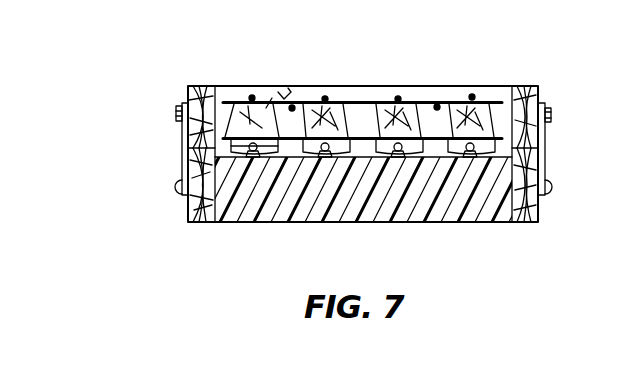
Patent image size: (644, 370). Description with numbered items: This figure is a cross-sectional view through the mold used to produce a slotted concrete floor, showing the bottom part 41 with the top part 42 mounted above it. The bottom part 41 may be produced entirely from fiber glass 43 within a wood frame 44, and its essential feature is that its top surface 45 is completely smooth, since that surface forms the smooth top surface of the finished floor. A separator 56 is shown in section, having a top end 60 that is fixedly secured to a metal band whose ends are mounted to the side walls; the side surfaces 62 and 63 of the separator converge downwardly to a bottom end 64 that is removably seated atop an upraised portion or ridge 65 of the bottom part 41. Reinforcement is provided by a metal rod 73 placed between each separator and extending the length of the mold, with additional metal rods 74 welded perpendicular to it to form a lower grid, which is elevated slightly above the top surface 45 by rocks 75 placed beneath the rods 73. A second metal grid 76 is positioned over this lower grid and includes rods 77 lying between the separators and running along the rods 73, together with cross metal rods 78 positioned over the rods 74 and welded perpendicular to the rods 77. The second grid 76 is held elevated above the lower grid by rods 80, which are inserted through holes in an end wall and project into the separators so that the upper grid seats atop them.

The bottom part 41 is at (532, 205).
The top part 42 is at (532, 134).
The fiber glass 43 is at (247, 207).
The wood frame 44 is at (200, 199).
The top surface 45 is at (238, 108).
The separator 56 is at (310, 103).
The top end 60 is at (272, 136).
The side surface 62 is at (366, 110).
The side surface 63 is at (277, 140).
The bottom end 64 is at (293, 150).
The upraised portion or ridge 65 is at (285, 160).
The metal rod 73 is at (235, 150).
The metal rod 74 is at (243, 130).
The rock 75 is at (468, 157).
The second metal grid 76 is at (513, 92).
The rod 77 is at (474, 97).
The cross metal rod 78 is at (412, 100).
The rod 80 is at (327, 99).